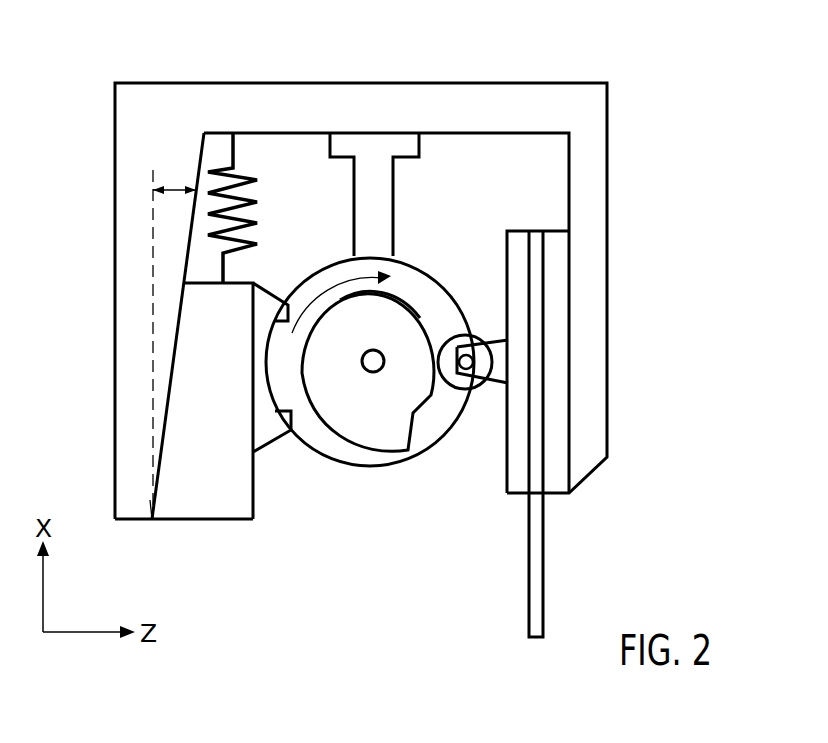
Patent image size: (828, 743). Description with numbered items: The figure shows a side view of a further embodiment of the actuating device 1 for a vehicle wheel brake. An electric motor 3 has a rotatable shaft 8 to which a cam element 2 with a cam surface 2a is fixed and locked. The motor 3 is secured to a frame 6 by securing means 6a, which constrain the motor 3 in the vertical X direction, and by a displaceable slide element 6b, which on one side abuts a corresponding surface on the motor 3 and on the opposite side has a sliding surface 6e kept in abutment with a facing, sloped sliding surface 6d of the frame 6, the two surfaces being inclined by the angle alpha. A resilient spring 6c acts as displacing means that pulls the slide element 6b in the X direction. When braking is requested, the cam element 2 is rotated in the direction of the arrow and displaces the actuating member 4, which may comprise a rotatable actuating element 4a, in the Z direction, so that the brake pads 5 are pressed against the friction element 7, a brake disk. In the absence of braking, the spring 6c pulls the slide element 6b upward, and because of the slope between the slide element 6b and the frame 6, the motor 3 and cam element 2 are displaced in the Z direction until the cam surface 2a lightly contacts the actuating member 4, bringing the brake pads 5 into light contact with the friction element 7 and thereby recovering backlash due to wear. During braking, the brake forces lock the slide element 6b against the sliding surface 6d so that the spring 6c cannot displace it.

The actuating device 1 is at (82, 77).
The cam element 2 is at (400, 423).
The cam surface 2a is at (428, 300).
The electric motor 3 is at (426, 255).
The actuating member 4 is at (485, 397).
The rotatable actuating element 4a is at (475, 340).
The brake pads 5 is at (555, 428).
The frame 6 is at (297, 97).
The securing means 6a is at (363, 212).
The slide element 6b is at (206, 508).
The resilient spring 6c is at (263, 191).
The sliding surface of the frame 6d is at (202, 277).
The sliding surface of the slide element 6e is at (157, 455).
The friction element 7 is at (538, 233).
The rotatable shaft 8 is at (373, 374).